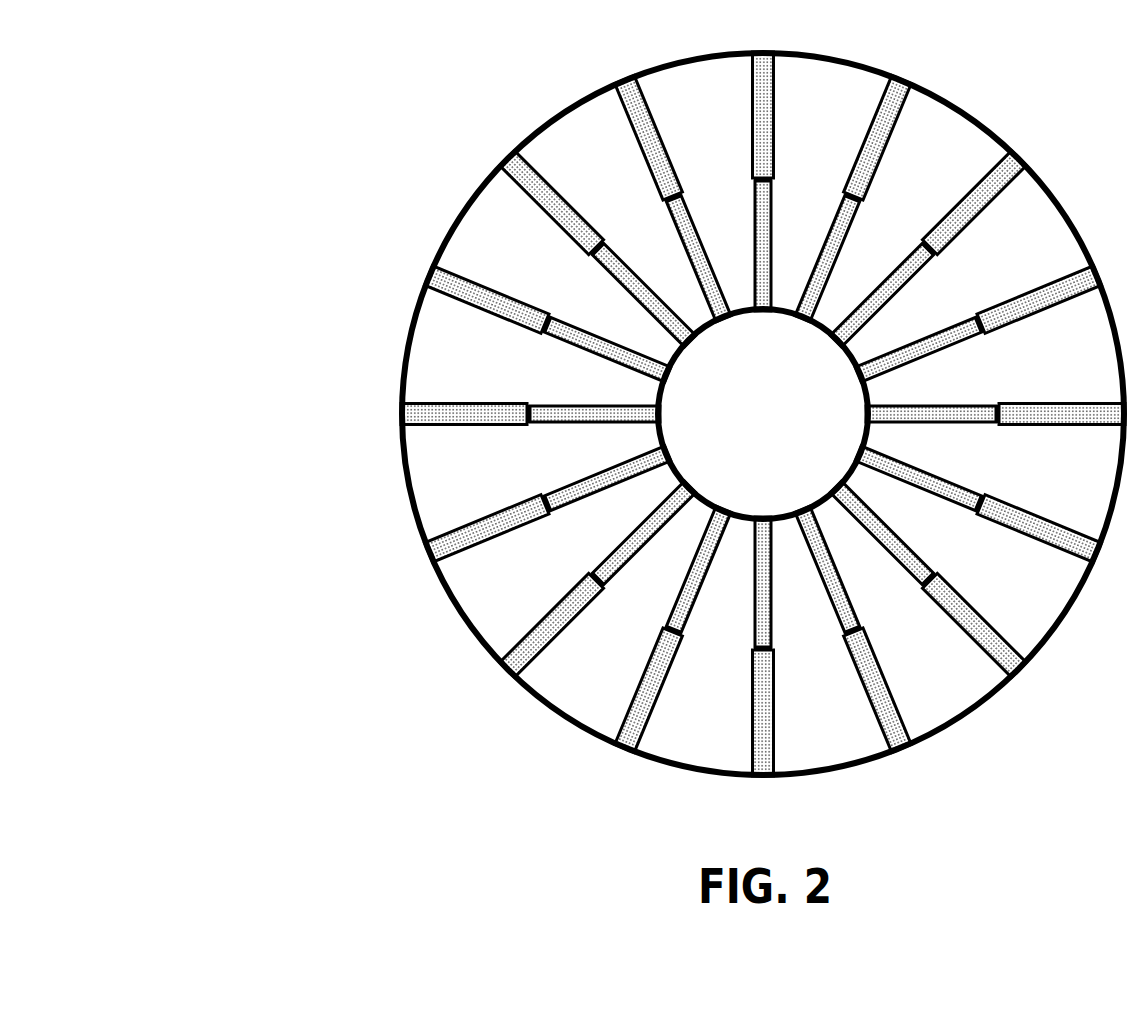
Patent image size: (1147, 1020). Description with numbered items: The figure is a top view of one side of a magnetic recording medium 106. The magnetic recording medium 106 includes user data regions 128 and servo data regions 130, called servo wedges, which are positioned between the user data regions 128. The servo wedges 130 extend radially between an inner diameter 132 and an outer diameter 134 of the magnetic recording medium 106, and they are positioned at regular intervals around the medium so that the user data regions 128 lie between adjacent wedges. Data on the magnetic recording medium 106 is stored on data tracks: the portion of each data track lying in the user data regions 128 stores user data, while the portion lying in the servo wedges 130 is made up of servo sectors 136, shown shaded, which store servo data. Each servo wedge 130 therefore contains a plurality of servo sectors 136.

The magnetic recording medium 106 is at (297, 190).
The user data regions 128 is at (1065, 470).
The servo data regions 130 is at (1099, 407).
The inner diameter 132 is at (763, 323).
The outer diameter 134 is at (487, 168).
The servo sectors 136 is at (530, 425).